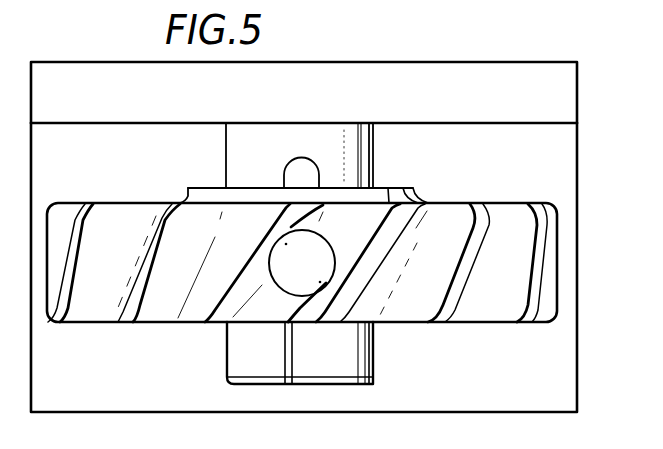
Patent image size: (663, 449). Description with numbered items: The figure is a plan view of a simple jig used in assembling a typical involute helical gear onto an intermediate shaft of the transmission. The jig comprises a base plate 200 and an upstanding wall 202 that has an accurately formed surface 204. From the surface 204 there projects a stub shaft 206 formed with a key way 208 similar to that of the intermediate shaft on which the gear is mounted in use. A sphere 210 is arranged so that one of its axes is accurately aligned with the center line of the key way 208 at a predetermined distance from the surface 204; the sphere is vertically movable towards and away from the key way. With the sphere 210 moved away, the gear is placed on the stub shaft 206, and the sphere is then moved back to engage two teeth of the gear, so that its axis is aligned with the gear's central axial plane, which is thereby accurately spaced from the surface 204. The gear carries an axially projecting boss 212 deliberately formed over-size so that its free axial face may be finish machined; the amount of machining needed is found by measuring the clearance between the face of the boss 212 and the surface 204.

The base plate 200 is at (502, 380).
The upstanding wall 202 is at (318, 104).
The accurately formed surface 204 is at (537, 123).
The stub shaft 206 is at (235, 139).
The key way 208 is at (310, 174).
The sphere 210 is at (319, 275).
The axially projecting boss 212 is at (186, 193).